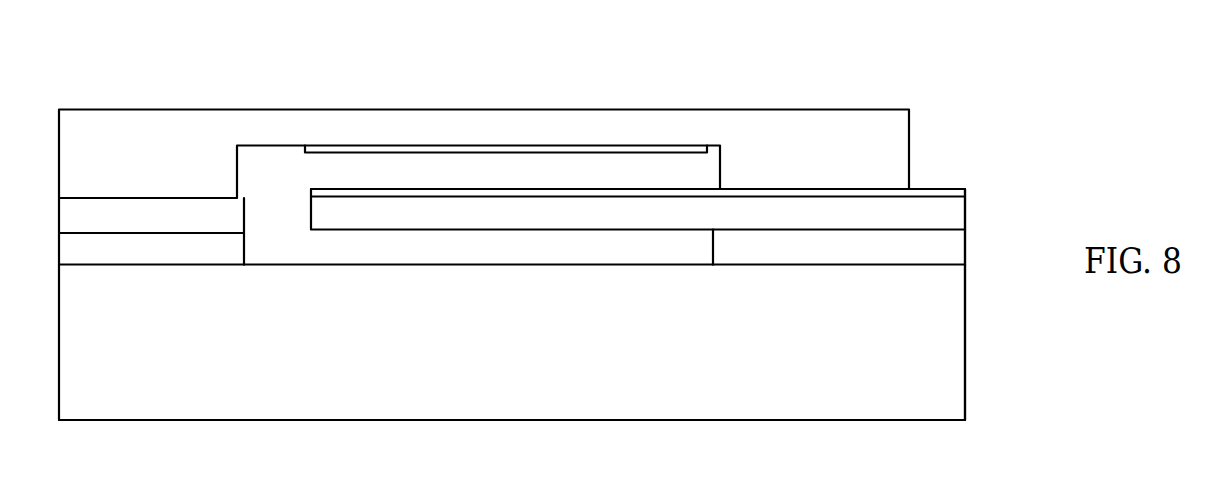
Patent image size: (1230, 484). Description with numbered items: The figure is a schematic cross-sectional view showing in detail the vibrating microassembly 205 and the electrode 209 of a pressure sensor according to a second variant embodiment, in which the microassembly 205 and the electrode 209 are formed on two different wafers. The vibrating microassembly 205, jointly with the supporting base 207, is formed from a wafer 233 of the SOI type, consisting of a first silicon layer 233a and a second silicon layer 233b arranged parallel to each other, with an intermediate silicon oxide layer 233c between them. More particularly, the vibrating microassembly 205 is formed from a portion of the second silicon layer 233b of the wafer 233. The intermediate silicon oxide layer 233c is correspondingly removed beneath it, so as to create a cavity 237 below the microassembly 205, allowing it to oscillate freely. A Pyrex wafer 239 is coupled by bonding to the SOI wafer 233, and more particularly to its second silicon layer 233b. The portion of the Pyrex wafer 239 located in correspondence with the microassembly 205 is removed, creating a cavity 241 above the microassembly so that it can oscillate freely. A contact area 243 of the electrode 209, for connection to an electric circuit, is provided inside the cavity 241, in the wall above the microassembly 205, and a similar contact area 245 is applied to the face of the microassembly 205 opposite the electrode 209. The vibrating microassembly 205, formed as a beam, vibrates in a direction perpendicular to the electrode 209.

The vibrating microassembly 205 is at (858, 215).
The supporting base 207 is at (893, 252).
The electrode 209 is at (536, 138).
The wafer 233 is at (518, 377).
The first silicon layer 233a is at (930, 393).
The second silicon layer 233b is at (955, 212).
The intermediate silicon oxide layer 233c is at (958, 246).
The cavity 237 is at (427, 253).
The Pyrex wafer 239 is at (167, 163).
The cavity 241 is at (652, 168).
The contact area 243 is at (464, 150).
The contact area 245 is at (772, 190).